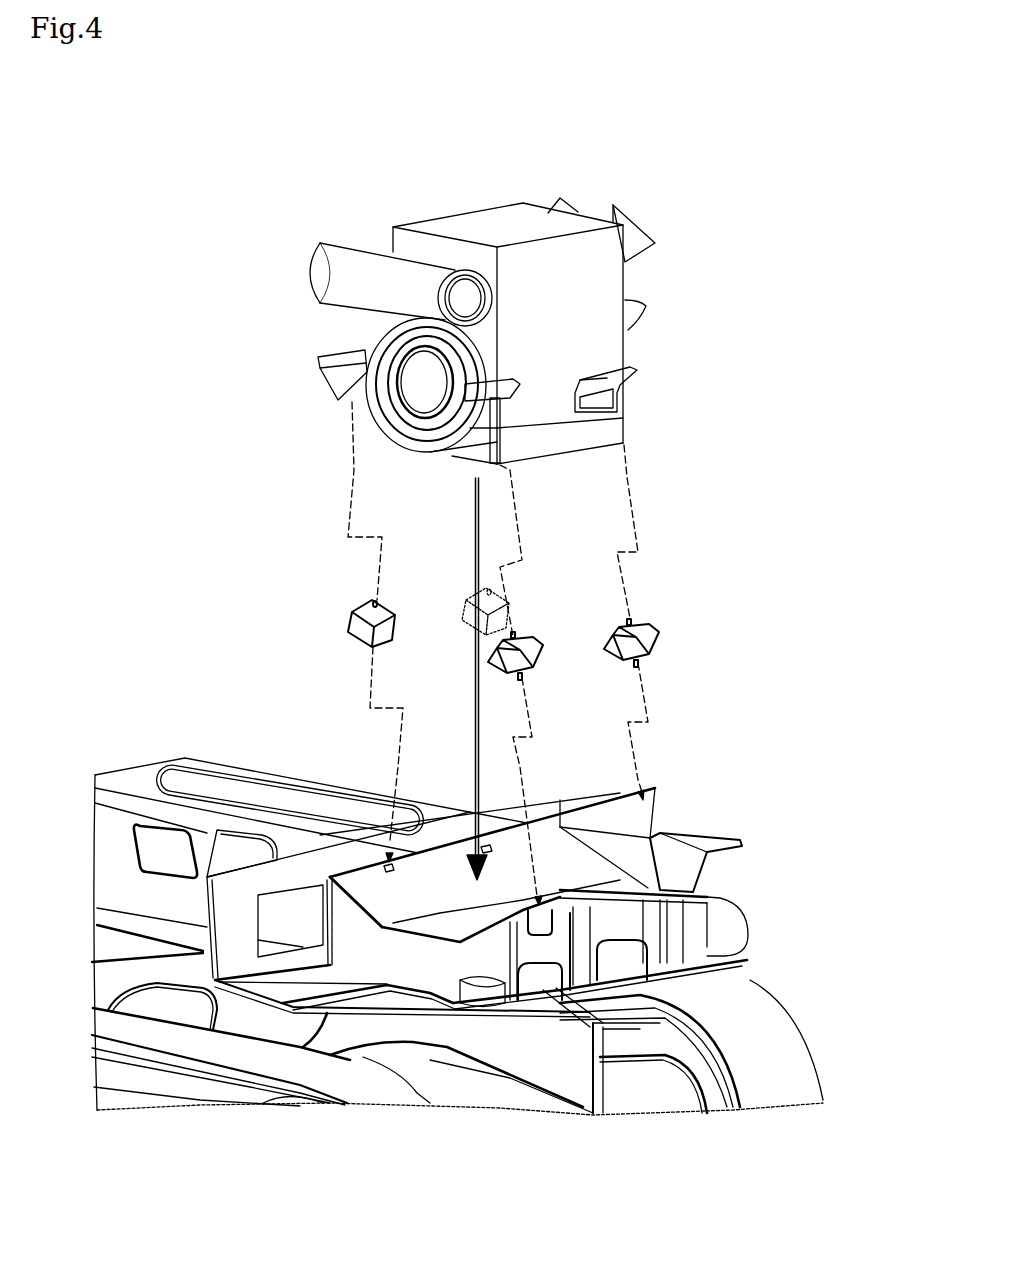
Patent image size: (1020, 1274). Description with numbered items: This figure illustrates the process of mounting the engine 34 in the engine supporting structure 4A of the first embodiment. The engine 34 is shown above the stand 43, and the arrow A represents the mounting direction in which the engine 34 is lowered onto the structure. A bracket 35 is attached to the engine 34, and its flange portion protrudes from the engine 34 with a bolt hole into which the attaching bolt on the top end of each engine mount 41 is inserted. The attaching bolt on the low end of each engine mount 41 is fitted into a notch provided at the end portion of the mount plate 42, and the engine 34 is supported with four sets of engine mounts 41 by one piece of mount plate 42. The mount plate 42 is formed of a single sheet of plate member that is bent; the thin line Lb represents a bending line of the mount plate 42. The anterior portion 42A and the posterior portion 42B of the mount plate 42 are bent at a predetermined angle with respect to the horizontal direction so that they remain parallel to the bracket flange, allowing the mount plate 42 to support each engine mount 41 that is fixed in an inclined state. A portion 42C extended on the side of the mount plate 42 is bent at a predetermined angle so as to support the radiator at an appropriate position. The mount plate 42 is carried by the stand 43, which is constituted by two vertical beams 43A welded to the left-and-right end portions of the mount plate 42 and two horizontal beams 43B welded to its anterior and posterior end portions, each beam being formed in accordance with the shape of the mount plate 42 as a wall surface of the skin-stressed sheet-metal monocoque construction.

The engine 34 is at (466, 212).
The bracket 35 is at (330, 358).
The engine mount 41 is at (458, 588).
The mount plate 42 is at (367, 886).
The anterior portion 42A is at (552, 828).
The posterior portion 42B is at (742, 952).
The extended portion 42C is at (700, 884).
The stand 43 is at (387, 963).
The vertical beam 43A is at (432, 968).
The horizontal beam 43B is at (620, 925).
The engine supporting structure 4A is at (792, 643).
The arrow A is at (470, 679).
The thin line Lb is at (463, 908).